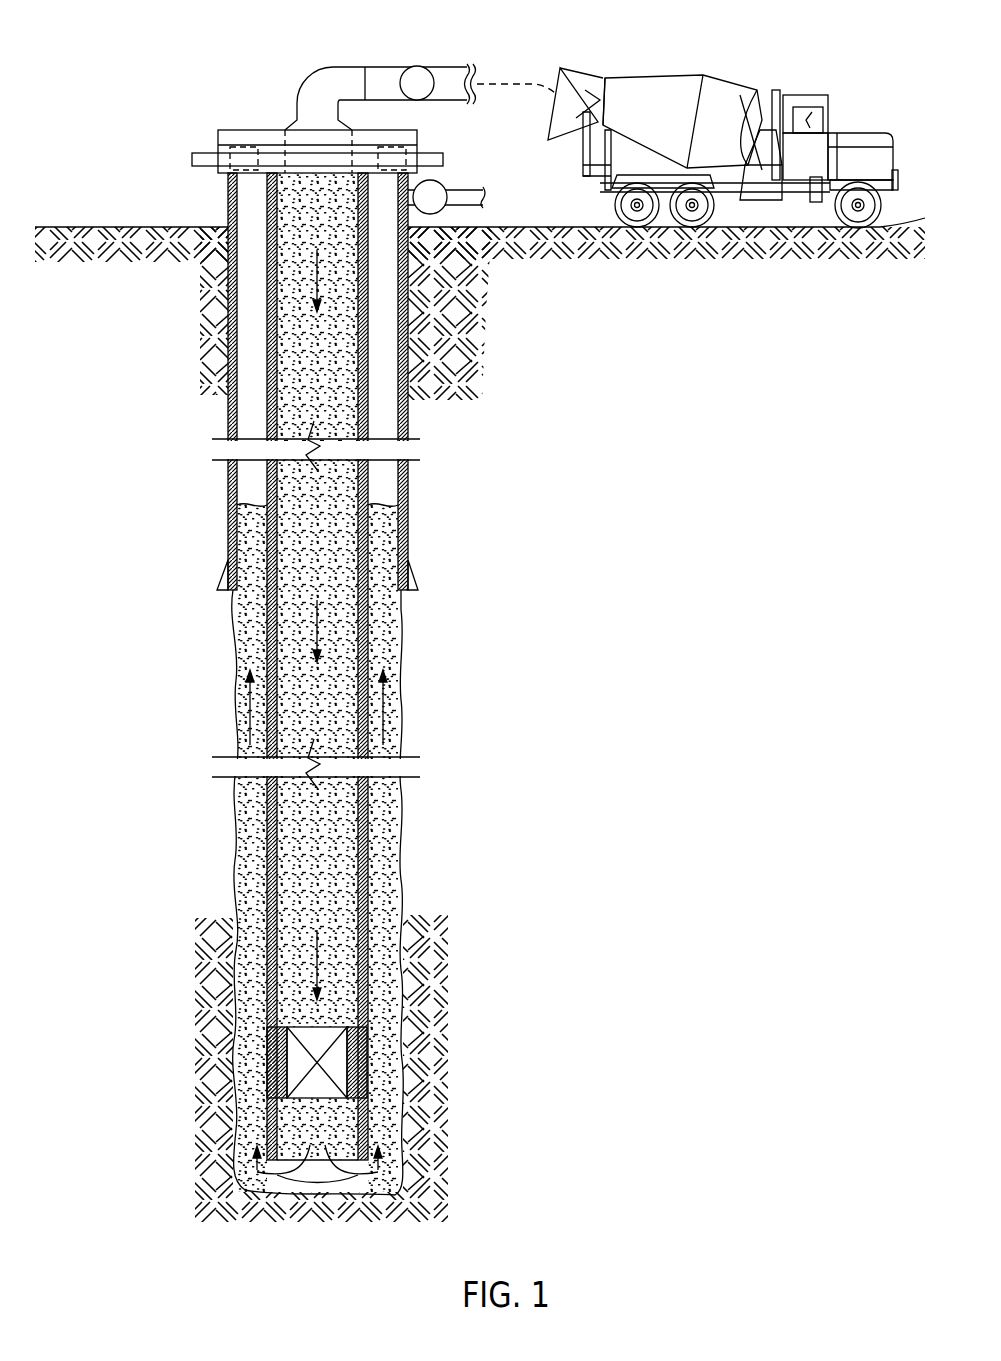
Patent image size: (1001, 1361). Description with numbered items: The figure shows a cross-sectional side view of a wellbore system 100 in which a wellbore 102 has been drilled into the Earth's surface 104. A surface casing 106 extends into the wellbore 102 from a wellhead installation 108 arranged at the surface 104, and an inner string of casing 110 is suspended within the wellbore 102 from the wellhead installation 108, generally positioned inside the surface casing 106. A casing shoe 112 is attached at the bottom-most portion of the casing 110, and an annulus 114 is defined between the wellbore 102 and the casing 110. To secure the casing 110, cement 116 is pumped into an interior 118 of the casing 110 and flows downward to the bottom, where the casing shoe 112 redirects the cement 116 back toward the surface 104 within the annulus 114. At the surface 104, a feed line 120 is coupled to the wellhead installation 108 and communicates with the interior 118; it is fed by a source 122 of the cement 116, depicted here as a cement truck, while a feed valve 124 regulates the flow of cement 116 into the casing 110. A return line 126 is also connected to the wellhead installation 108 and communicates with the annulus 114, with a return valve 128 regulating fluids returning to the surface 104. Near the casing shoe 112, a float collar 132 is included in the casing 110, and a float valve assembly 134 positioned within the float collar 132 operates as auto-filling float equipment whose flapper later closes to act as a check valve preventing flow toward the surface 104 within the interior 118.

The wellbore system 100 is at (136, 330).
The wellbore 102 is at (236, 649).
The Earth's surface 104 is at (95, 226).
The surface casing 106 is at (408, 469).
The wellhead installation 108 is at (222, 152).
The casing 110 is at (368, 640).
The casing shoe 112 is at (385, 1157).
The annulus 114 is at (233, 425).
The cement 116 is at (290, 216).
The interior 118 is at (297, 554).
The feed line 120 is at (327, 78).
The source 122 is at (825, 100).
The feed valve 124 is at (423, 88).
The return line 126 is at (468, 204).
The return valve 128 is at (445, 189).
The float collar 132 is at (283, 1070).
The float valve assembly 134 is at (345, 1052).